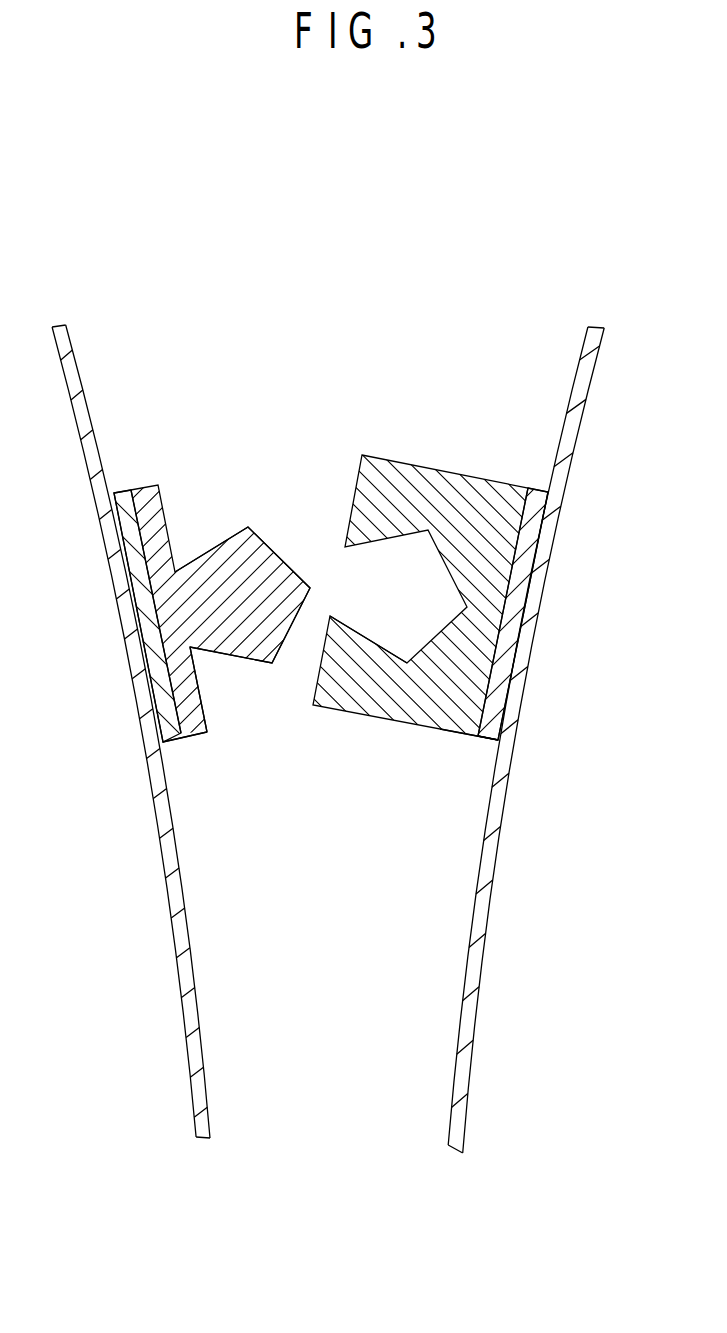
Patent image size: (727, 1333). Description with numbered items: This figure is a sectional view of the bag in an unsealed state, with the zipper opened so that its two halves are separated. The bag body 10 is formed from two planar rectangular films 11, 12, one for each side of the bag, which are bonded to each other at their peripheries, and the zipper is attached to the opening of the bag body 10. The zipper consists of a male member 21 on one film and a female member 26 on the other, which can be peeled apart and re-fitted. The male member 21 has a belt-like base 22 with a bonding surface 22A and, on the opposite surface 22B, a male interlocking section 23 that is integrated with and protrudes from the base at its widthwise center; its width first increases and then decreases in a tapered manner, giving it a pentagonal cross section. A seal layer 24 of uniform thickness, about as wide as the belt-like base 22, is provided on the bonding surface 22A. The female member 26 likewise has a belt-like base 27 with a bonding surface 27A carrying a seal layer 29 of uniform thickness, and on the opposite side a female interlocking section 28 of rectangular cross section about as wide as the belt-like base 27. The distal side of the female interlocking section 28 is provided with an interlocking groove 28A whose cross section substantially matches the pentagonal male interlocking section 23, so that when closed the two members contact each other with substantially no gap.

The bag body 10 is at (328, 792).
The film 11 is at (203, 1119).
The film 12 is at (505, 769).
The male member 21 is at (301, 575).
The belt-like base 22 is at (147, 485).
The bonding surface 22A is at (182, 715).
The surface 22B is at (195, 720).
The male interlocking section 23 is at (243, 553).
The seal layer 24 is at (121, 510).
The female member 26 is at (363, 577).
The belt-like base 27 is at (492, 503).
The bonding surface 27A is at (485, 706).
The female interlocking section 28 is at (397, 502).
The interlocking groove 28A is at (360, 650).
The seal layer 29 is at (534, 510).